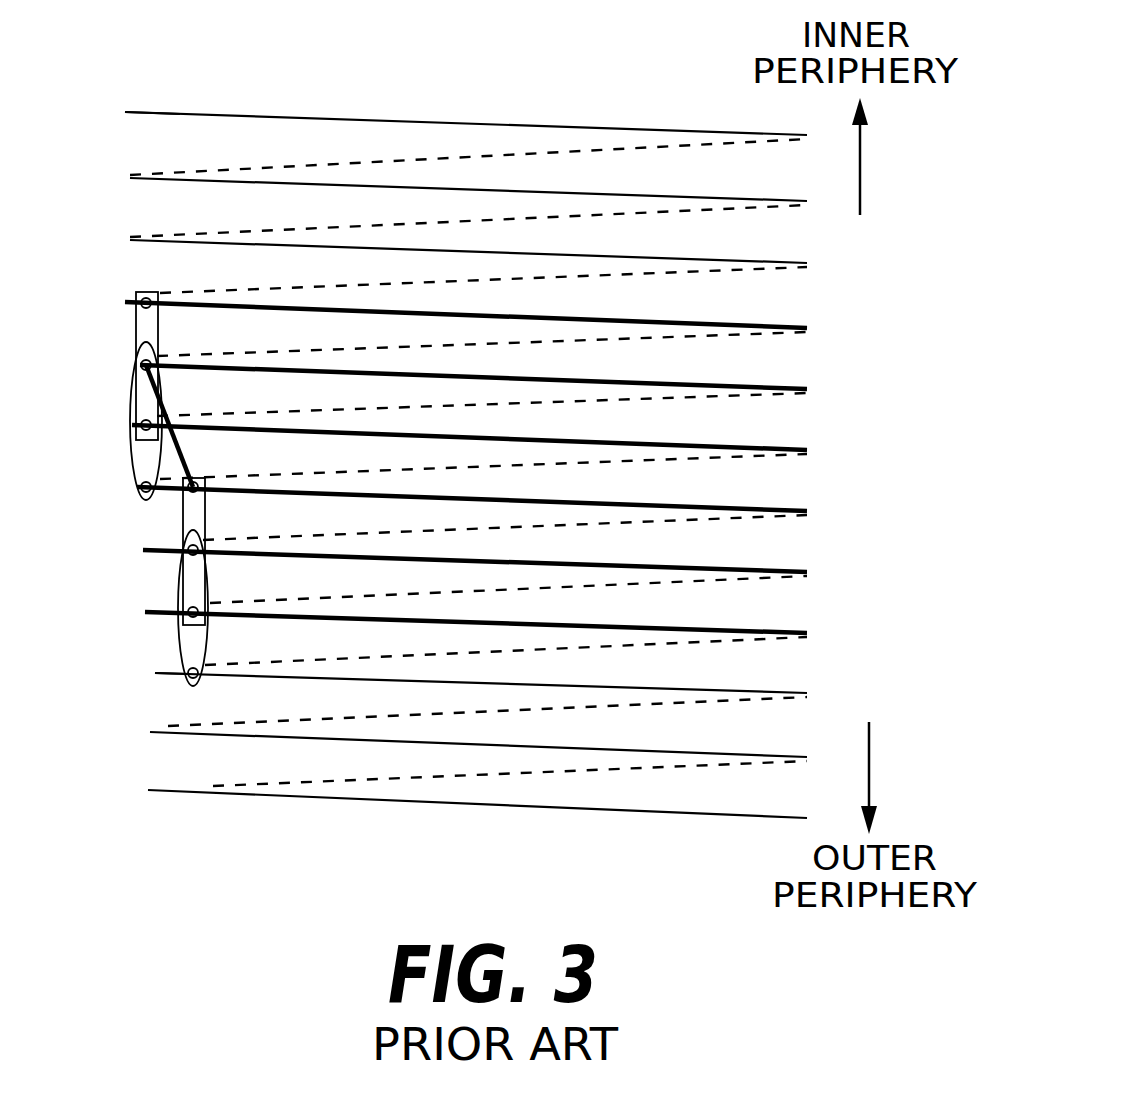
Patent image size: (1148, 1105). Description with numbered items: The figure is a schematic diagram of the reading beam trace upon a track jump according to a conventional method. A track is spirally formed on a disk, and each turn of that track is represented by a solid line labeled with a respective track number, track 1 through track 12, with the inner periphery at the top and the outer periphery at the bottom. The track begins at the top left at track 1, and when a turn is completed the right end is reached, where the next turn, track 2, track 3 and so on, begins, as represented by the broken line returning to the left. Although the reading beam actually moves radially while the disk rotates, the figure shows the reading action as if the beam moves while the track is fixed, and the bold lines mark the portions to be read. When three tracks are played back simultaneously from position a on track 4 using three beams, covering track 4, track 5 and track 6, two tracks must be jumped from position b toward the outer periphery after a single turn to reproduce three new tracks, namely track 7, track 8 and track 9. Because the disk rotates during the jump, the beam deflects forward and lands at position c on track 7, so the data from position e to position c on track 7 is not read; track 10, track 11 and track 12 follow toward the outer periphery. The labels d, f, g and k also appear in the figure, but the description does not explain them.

The track 1 is at (446, 115).
The track 2 is at (446, 170).
The track 3 is at (446, 234).
The track 4 is at (446, 297).
The track 5 is at (446, 360).
The track 6 is at (446, 421).
The track 7 is at (446, 482).
The track 8 is at (446, 544).
The track 9 is at (446, 605).
The track 10 is at (440, 666).
The track 11 is at (440, 727).
The track 12 is at (440, 789).
The position a is at (133, 344).
The position b is at (137, 412).
The position c is at (194, 342).
The second seek range d is at (184, 600).
The position e is at (133, 494).
The track position f is at (165, 692).
The track position g is at (206, 694).
The track k is at (147, 86).